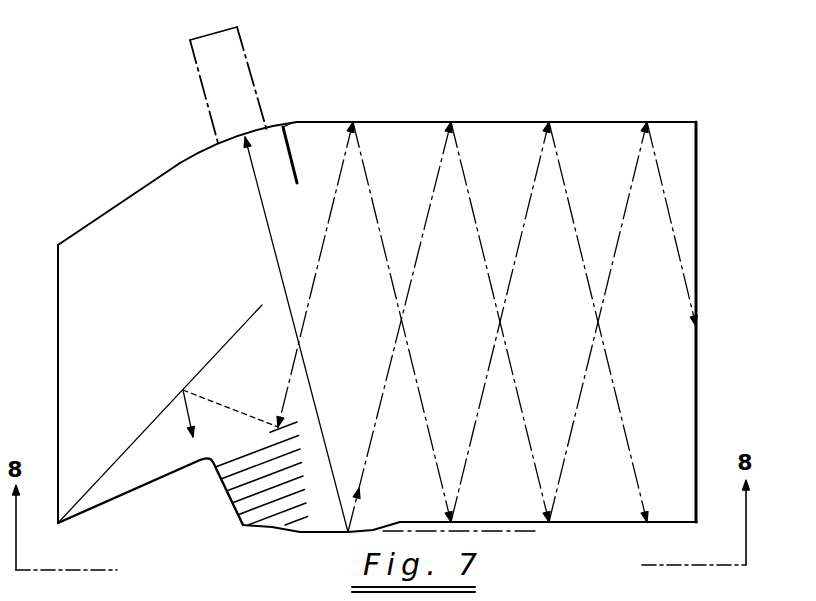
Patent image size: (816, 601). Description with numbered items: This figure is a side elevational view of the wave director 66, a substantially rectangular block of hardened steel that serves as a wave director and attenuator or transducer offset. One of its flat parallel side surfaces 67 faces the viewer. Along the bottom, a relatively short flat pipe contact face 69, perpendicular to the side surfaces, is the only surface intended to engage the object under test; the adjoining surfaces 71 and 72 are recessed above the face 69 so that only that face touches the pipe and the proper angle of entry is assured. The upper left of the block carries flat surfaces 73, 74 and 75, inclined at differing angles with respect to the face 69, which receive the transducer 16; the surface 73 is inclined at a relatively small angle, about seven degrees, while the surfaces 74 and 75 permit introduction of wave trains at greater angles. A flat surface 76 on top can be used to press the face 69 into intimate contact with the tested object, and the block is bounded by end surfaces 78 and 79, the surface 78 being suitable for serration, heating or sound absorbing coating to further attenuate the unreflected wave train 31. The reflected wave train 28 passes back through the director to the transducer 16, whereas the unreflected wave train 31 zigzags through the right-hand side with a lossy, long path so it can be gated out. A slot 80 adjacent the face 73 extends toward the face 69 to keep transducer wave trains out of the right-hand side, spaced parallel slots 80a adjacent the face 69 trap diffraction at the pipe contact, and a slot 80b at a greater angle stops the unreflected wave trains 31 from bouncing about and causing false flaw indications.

The transducer 16 is at (253, 82).
The reflected wave train 28 is at (316, 412).
The unreflected wave train 31 is at (308, 303).
The wave director 66 is at (622, 121).
The flat parallel surface 67 is at (548, 600).
The pipe contact face 69 is at (331, 533).
The recessed surface 71 is at (282, 530).
The recessed surface 72 is at (594, 524).
The inclined flat surface 73 is at (287, 124).
The inclined flat surface 74 is at (192, 157).
The inclined flat surface 75 is at (105, 212).
The flat surface 76 is at (430, 121).
The end surface 78 is at (697, 233).
The end surface 79 is at (58, 283).
The slot 80 is at (290, 153).
The diffraction trap slots 80a is at (243, 490).
The slot 80b is at (200, 371).